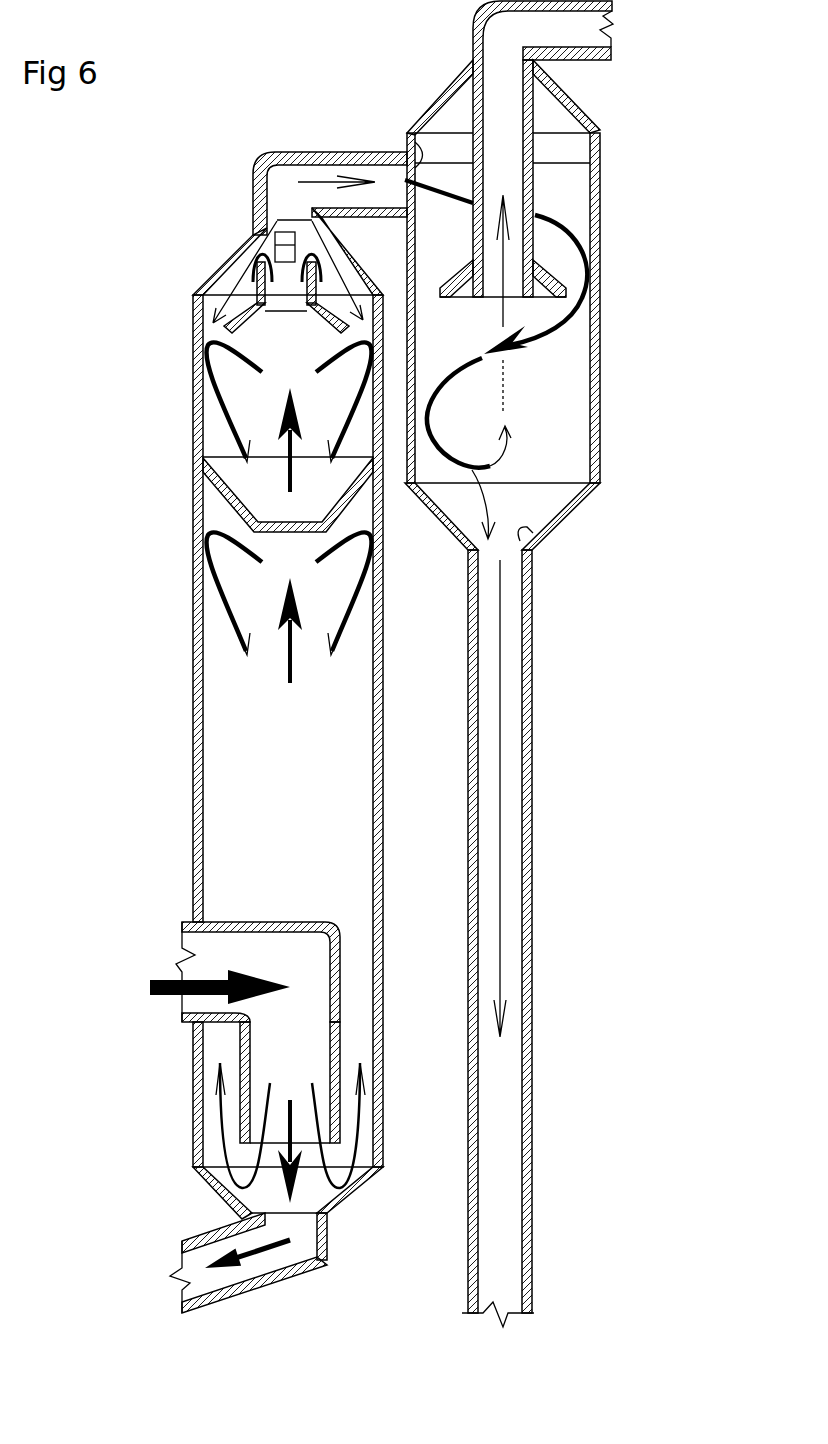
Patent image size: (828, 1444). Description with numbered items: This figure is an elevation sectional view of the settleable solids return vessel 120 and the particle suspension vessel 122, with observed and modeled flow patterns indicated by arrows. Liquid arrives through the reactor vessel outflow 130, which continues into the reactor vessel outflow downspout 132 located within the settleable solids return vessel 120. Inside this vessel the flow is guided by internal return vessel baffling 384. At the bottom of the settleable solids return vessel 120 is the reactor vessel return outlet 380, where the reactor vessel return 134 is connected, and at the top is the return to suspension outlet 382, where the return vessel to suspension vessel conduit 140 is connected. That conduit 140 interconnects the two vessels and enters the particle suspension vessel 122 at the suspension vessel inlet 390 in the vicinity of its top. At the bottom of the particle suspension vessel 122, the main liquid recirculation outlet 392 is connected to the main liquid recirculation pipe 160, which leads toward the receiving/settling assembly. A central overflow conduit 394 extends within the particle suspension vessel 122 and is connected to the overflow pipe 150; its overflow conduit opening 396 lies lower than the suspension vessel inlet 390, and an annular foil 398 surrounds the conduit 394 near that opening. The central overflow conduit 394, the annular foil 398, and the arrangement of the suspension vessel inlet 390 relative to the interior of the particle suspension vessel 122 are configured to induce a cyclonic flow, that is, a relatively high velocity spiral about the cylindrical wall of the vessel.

The settleable solids return vessel 120 is at (193, 705).
The particle suspension vessel 122 is at (602, 342).
The reactor vessel outflow 130 is at (182, 925).
The reactor vessel outflow downspout 132 is at (240, 1068).
The reactor vessel return 134 is at (233, 1290).
The return vessel to suspension vessel conduit 140 is at (328, 152).
The overflow pipe 150 is at (600, 62).
The main liquid recirculation pipe 160 is at (535, 1083).
The reactor vessel return outlet 380 is at (327, 1215).
The return to suspension outlet 382 is at (275, 215).
The internal return vessel baffling 384 is at (235, 485).
The suspension vessel inlet 390 is at (407, 137).
The main liquid recirculation outlet 392 is at (533, 536).
The central overflow conduit 394 is at (590, 163).
The overflow conduit opening 396 is at (535, 310).
The annular foil 398 is at (547, 283).